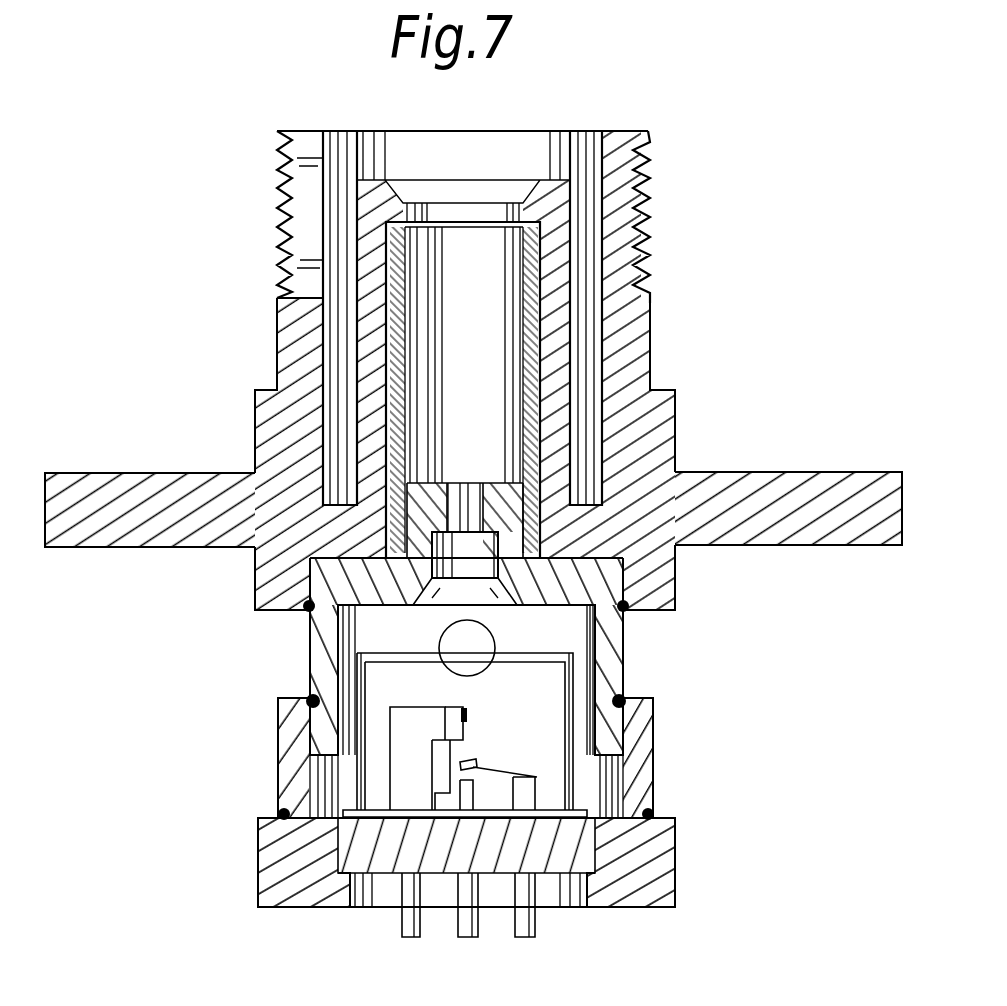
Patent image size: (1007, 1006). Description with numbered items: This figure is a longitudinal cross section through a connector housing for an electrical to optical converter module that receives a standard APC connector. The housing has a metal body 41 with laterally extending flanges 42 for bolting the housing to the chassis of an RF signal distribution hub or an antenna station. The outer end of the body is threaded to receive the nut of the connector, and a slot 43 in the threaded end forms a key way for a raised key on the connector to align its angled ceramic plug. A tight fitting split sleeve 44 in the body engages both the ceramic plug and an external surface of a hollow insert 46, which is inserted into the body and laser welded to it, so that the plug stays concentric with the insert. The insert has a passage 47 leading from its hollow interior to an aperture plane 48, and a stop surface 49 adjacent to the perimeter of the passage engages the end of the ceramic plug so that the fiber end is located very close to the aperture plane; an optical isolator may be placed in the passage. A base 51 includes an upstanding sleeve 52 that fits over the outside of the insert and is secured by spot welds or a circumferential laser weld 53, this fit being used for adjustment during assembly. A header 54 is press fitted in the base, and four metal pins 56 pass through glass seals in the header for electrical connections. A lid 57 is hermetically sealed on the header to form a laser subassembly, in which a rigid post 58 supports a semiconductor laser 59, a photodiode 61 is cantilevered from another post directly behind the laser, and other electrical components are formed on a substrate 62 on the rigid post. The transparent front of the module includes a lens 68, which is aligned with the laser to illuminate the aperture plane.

The metal body 41 is at (675, 393).
The laterally extending flanges 42 is at (780, 472).
The slot 43 is at (277, 268).
The split sleeve 44 is at (530, 253).
The hollow insert 46 is at (625, 650).
The passage 47 is at (473, 550).
The aperture plane 48 is at (468, 480).
The stop surface 49 is at (495, 483).
The base 51 is at (680, 837).
The upstanding sleeve 52 is at (653, 728).
The laser weld 53 is at (627, 697).
The header 54 is at (550, 873).
The metal pins 56 is at (470, 937).
The lid 57 is at (360, 672).
The rigid post 58 is at (397, 772).
The semiconductor laser 59 is at (467, 713).
The photodiode 61 is at (480, 760).
The substrate 62 is at (437, 757).
The lens 68 is at (490, 638).